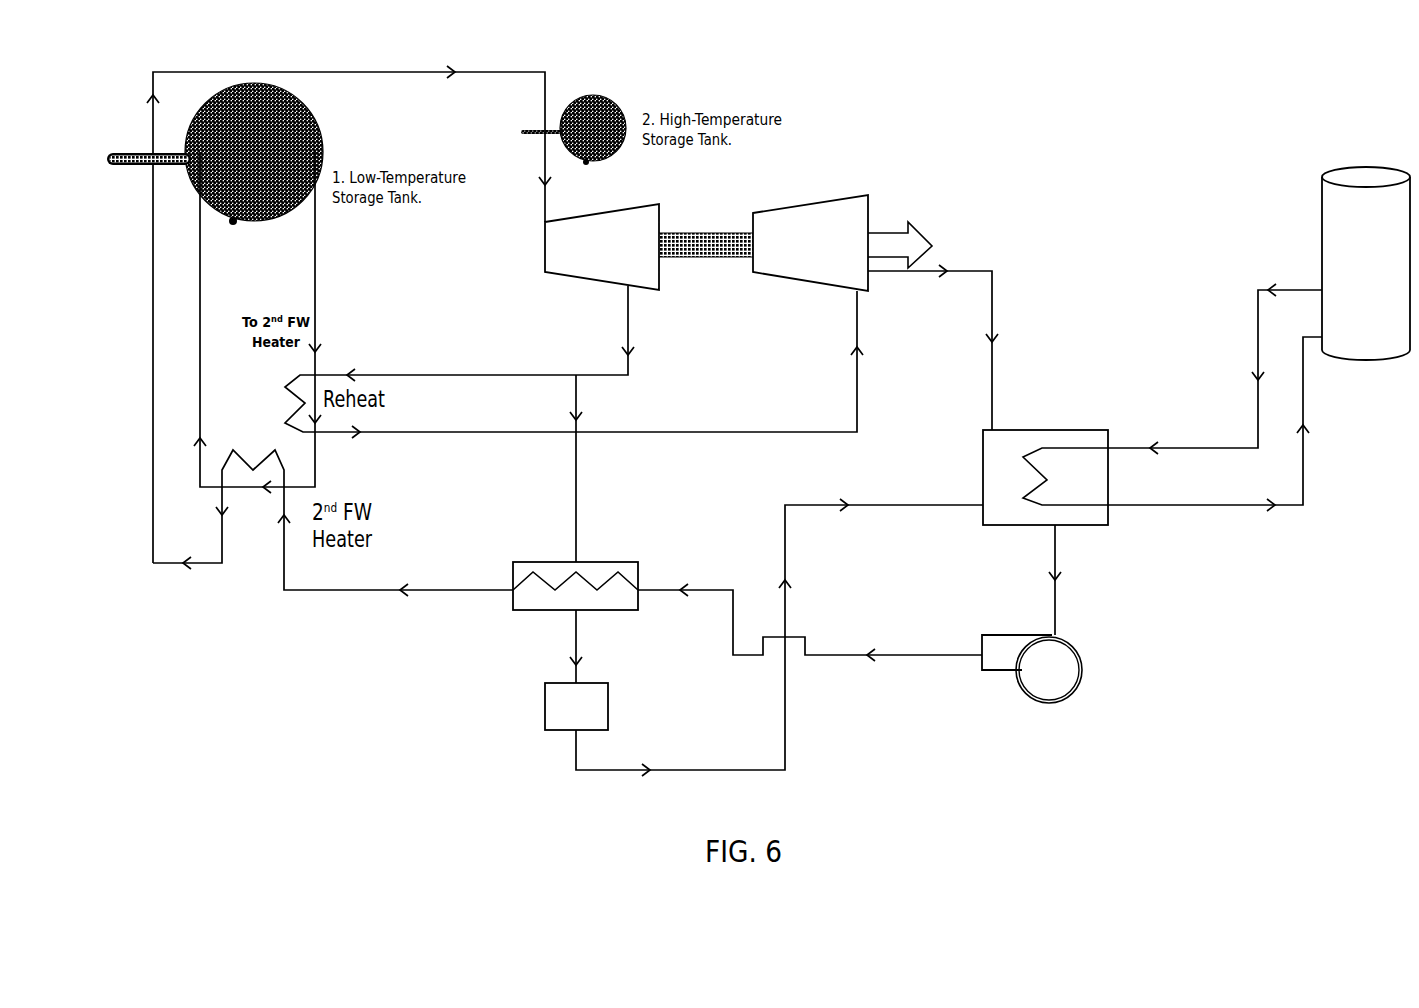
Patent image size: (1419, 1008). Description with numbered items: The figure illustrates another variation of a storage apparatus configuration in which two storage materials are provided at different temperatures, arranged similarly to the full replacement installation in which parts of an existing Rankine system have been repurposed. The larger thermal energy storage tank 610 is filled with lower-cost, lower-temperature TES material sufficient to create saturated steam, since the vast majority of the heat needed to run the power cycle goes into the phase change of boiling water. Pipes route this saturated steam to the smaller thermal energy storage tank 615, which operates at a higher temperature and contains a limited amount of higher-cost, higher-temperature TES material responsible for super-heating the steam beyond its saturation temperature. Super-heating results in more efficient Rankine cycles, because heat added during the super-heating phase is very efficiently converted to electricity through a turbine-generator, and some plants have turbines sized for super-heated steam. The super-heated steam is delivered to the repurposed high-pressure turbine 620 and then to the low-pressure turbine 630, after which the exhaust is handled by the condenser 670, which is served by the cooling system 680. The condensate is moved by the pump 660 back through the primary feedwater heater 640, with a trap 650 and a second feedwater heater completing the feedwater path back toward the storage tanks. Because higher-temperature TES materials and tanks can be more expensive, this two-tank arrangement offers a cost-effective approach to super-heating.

The thermal energy storage tank 610 is at (235, 154).
The thermal energy storage tank 615 is at (575, 135).
The high-pressure turbine 620 is at (640, 212).
The low-pressure turbine 630 is at (805, 190).
The primary feedwater heater 640 is at (595, 545).
The trap 650 is at (553, 733).
The pump 660 is at (1088, 643).
The condenser 670 is at (1028, 398).
The cooling system 680 is at (1385, 267).